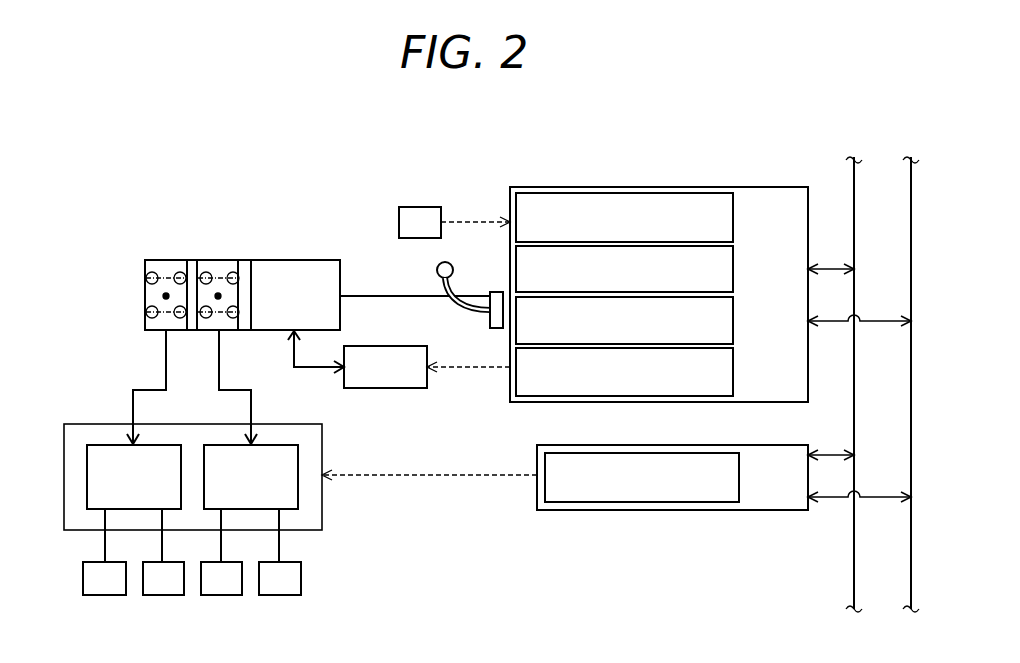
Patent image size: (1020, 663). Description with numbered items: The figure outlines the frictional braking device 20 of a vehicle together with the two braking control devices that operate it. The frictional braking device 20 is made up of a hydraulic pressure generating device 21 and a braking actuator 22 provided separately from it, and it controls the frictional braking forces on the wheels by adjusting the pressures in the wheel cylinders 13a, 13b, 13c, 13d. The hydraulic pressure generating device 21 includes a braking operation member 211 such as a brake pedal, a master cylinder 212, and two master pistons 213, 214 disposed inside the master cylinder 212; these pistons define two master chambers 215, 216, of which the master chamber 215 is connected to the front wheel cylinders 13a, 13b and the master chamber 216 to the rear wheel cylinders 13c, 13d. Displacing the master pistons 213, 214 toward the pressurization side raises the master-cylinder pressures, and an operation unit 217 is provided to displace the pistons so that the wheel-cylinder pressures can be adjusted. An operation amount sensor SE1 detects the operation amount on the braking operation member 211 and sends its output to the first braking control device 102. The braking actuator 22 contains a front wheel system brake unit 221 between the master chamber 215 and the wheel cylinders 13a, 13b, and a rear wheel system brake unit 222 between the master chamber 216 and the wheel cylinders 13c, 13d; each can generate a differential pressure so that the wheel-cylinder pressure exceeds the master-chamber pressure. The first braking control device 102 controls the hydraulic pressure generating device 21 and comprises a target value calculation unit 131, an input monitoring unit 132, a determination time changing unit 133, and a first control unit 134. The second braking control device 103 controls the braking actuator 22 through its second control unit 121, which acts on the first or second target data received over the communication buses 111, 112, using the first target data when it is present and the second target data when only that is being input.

The frictional braking device 20 is at (72, 248).
The hydraulic pressure generating device 21 is at (156, 222).
The braking actuator 22 is at (76, 424).
The wheel cylinder 13a is at (106, 596).
The wheel cylinder 13b is at (165, 596).
The wheel cylinder 13c is at (223, 596).
The wheel cylinder 13d is at (282, 596).
The first braking control device 102 is at (710, 187).
The second braking control device 103 is at (710, 445).
The communication bus 111 is at (850, 156).
The communication bus 112 is at (907, 175).
The second control unit 121 is at (739, 480).
The target value calculation unit 131 is at (733, 222).
The input monitoring unit 132 is at (733, 322).
The determination time changing unit 133 is at (733, 365).
The first control unit 134 is at (733, 270).
The braking operation member 211 is at (495, 292).
The master cylinder 212 is at (295, 260).
The master piston 213 is at (192, 267).
The master piston 214 is at (247, 245).
The master chamber 215 is at (166, 296).
The master chamber 216 is at (218, 296).
The operation unit 217 is at (397, 345).
The front wheel system brake unit 221 is at (106, 472).
The rear wheel system brake unit 222 is at (283, 456).
The operation amount sensor SE1 is at (423, 207).